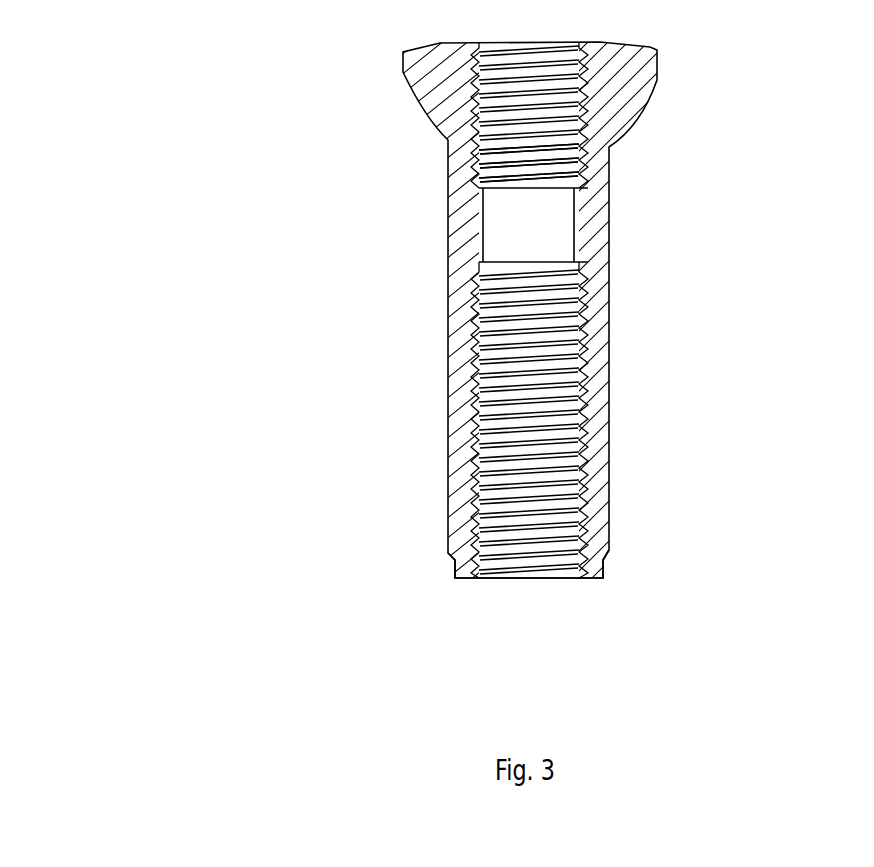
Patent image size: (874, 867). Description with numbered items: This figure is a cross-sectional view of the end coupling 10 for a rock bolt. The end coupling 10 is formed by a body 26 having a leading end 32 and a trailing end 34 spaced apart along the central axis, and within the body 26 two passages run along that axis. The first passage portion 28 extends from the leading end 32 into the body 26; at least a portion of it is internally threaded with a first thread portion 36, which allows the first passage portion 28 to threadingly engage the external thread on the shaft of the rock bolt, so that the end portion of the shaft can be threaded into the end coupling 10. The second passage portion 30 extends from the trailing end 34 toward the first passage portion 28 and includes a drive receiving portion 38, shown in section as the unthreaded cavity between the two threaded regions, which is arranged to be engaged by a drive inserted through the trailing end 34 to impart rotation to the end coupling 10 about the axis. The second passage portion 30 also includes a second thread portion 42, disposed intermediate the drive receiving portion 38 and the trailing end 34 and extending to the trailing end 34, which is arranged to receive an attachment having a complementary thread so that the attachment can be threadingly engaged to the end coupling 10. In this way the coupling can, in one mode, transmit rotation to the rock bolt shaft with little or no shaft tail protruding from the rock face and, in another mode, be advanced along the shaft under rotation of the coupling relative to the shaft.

The end coupling 10 is at (289, 326).
The body 26 is at (612, 382).
The first passage portion 28 is at (578, 499).
The second passage portion 30 is at (578, 108).
The leading end 32 is at (602, 558).
The trailing end 34 is at (623, 71).
The first thread portion 36 is at (575, 463).
The drive receiving portion 38 is at (556, 233).
The second thread portion 42 is at (578, 148).